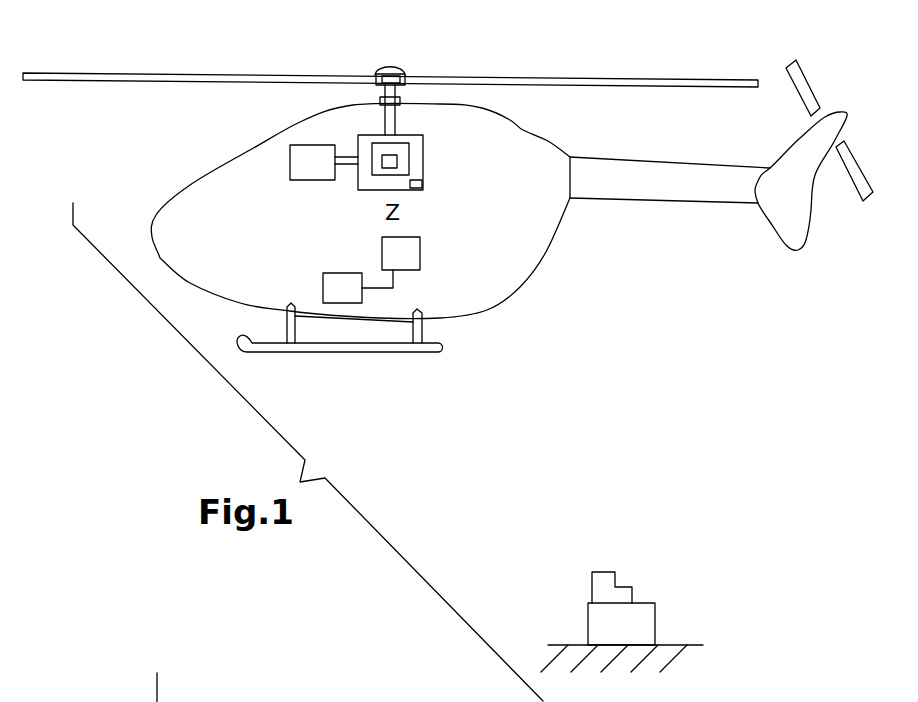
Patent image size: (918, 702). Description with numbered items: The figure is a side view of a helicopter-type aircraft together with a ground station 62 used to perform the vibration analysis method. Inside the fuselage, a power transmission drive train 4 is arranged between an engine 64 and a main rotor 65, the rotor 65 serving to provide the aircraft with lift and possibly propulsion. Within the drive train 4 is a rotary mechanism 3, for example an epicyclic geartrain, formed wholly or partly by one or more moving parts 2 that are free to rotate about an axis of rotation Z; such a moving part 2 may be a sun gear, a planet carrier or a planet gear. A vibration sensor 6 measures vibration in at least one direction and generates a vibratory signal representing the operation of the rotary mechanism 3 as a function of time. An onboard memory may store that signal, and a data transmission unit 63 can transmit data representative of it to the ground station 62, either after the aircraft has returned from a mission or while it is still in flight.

The moving part 2 is at (397, 163).
The rotary mechanism 3 is at (377, 143).
The power transmission drive train 4 is at (345, 189).
The vibration sensor 6 is at (423, 185).
The ground station 62 is at (600, 587).
The data transmission unit 63 is at (323, 288).
The engine 64 is at (303, 145).
The rotor 65 is at (432, 70).